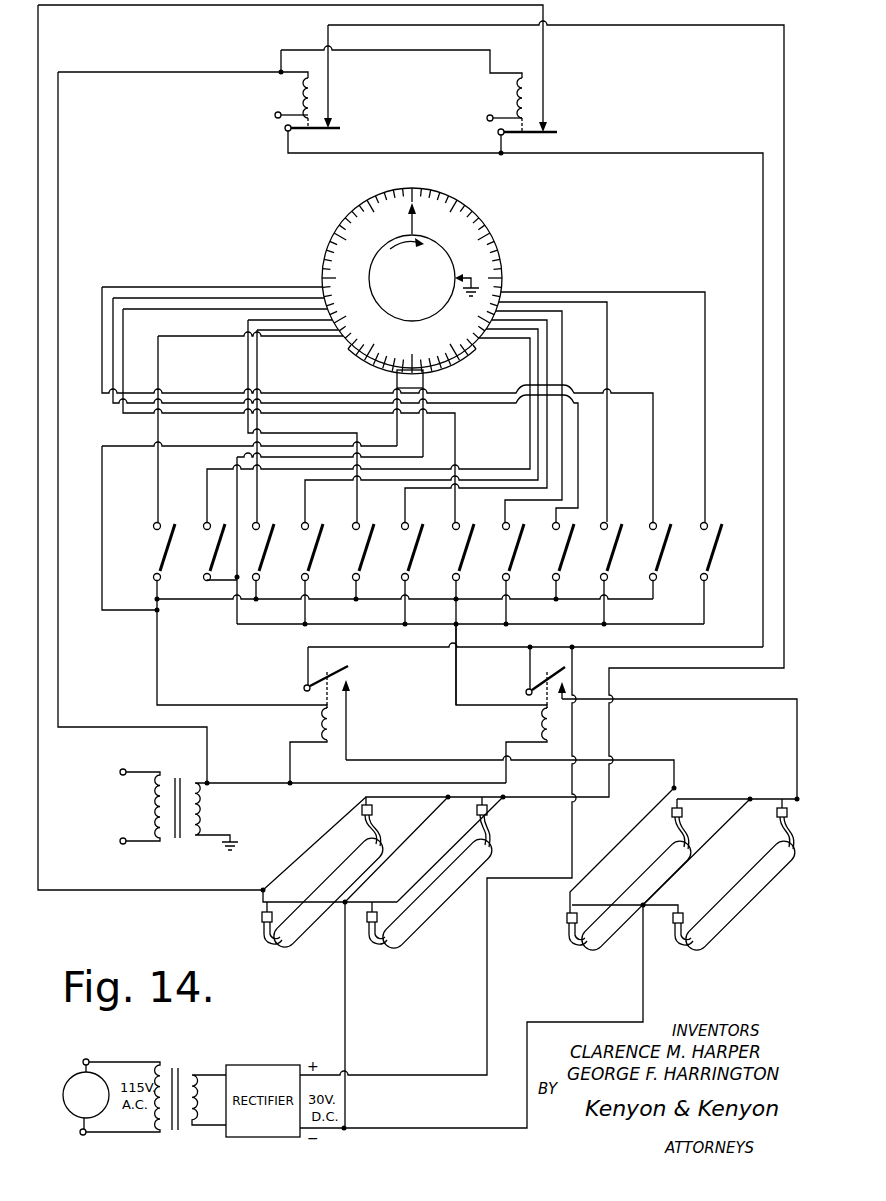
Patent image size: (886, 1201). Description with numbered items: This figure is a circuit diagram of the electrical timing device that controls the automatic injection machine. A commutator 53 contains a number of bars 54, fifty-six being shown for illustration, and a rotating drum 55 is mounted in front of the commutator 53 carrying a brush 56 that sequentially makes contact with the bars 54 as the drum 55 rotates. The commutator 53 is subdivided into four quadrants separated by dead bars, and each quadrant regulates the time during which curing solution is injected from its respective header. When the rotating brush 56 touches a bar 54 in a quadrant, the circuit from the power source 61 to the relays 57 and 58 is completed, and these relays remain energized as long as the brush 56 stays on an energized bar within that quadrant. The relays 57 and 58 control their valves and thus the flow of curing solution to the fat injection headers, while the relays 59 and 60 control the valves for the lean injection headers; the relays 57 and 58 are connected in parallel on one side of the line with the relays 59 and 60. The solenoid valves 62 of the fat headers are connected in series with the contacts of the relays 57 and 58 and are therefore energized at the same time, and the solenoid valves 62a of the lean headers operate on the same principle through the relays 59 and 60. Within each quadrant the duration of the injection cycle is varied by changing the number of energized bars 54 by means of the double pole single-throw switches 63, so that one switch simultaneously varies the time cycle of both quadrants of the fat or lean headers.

The commutator 53 is at (442, 281).
The bars 54 is at (480, 223).
The rotating drum 55 is at (373, 305).
The brush 56 is at (418, 208).
The relay 57 is at (282, 98).
The relay 58 is at (532, 95).
The relay 59 is at (308, 724).
The relay 60 is at (538, 723).
The power source 61 is at (100, 823).
The solenoid valves 62 is at (262, 919).
The solenoid valves 62a is at (570, 926).
The double pole single-throw switches 63 is at (712, 574).